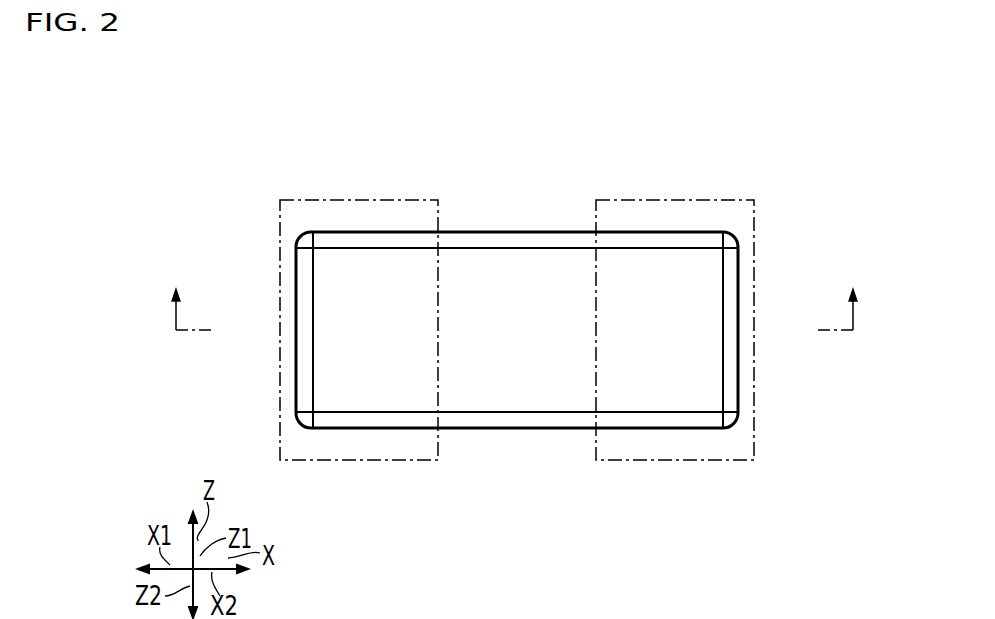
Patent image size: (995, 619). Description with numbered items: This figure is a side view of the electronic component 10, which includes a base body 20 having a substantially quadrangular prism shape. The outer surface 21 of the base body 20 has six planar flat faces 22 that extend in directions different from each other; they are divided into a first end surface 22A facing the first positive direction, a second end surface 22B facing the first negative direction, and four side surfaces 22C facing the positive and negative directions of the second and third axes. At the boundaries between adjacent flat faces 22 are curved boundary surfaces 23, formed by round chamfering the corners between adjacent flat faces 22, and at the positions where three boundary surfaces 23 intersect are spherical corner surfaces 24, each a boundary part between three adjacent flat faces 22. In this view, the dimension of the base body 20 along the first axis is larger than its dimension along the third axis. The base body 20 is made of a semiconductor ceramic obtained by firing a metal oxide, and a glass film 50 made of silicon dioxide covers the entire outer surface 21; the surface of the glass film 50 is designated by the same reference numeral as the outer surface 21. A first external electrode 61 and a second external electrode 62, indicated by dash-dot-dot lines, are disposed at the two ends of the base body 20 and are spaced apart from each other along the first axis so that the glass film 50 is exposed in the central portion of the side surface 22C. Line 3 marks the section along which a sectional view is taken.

The electronic component 10 is at (290, 123).
The base body 20 is at (367, 177).
The outer surface 21 is at (678, 348).
The flat faces 22 is at (685, 275).
The first end surface 22A is at (296, 278).
The second end surface 22B is at (740, 382).
The side surfaces 22C is at (360, 318).
The boundary surfaces 23 is at (298, 303).
The corner surfaces 24 is at (300, 240).
The glass film 50 is at (556, 232).
The first external electrode 61 is at (280, 212).
The second external electrode 62 is at (755, 226).
The line 3- 3 is at (514, 295).